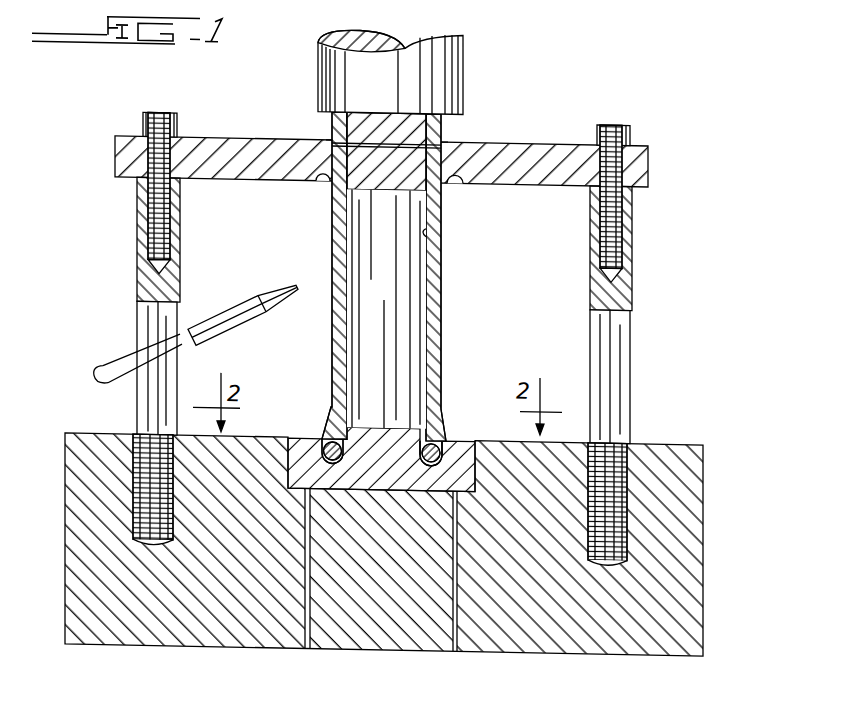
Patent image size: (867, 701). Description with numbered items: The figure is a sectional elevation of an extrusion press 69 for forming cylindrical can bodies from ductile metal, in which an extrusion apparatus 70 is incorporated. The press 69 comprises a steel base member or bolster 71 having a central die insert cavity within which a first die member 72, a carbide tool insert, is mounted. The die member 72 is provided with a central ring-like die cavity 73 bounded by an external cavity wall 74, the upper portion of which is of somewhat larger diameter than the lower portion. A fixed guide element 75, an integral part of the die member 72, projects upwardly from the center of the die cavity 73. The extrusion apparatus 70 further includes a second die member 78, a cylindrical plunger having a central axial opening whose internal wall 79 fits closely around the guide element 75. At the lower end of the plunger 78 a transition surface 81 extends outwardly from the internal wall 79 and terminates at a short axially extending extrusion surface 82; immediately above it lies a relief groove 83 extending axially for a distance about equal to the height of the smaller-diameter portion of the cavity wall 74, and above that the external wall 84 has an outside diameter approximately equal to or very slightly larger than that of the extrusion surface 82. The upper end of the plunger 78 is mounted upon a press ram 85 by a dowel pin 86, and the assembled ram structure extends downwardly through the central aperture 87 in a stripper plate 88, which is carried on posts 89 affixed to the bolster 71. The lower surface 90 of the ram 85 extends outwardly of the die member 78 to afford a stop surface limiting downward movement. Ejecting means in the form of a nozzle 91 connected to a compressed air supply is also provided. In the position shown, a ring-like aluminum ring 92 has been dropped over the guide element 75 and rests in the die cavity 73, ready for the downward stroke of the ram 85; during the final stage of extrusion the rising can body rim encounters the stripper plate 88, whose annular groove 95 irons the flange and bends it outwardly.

The extrusion press 69 is at (553, 78).
The extrusion apparatus 70 is at (450, 383).
The bolster 71 is at (672, 443).
The first die member 72 is at (298, 440).
The die cavity 73 is at (331, 442).
The external cavity wall 74 is at (324, 442).
The guide element 75 is at (380, 428).
The second die member 78 is at (397, 297).
The internal wall 79 is at (428, 233).
The transition surface 81 is at (440, 441).
The extrusion surface 82 is at (438, 437).
The relief groove 83 is at (436, 431).
The external wall 84 is at (441, 270).
The press ram 85 is at (384, 86).
The dowel pin 86 is at (448, 139).
The central aperture 87 is at (333, 141).
The stripper plate 88 is at (548, 157).
The posts 89 is at (152, 393).
The lower surface 90 is at (450, 116).
The nozzle 91 is at (225, 321).
The aluminum ring 92 is at (452, 463).
The annular groove 95 is at (455, 183).